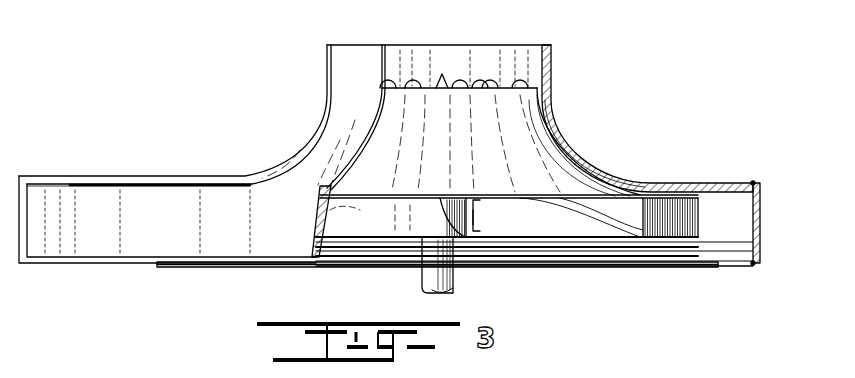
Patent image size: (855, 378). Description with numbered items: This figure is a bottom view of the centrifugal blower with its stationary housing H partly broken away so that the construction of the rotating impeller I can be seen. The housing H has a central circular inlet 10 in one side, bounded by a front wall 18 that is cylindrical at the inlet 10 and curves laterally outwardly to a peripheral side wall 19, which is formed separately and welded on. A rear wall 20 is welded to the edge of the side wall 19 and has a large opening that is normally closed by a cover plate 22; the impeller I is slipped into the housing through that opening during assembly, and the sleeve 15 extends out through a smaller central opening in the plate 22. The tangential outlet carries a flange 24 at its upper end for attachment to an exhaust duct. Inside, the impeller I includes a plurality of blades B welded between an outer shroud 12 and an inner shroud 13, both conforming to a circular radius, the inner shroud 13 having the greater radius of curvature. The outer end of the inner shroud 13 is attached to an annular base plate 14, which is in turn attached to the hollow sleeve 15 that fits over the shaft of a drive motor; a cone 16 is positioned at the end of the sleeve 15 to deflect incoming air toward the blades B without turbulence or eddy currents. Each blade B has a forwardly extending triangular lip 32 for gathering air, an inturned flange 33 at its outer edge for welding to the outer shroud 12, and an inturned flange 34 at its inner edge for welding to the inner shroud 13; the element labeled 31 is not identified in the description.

The inlet 10 is at (378, 46).
The outer shroud 12 is at (447, 151).
The inner shroud 13 is at (520, 232).
The base plate 14 is at (355, 245).
The sleeve 15 is at (422, 280).
The cone 16 is at (443, 80).
The front wall 18 is at (551, 83).
The side wall 19 is at (110, 240).
The rear wall 20 is at (751, 264).
The cover plate 22 is at (660, 268).
The flange 24 is at (117, 178).
The spring contact 31 is at (405, 80).
The lip 32 is at (455, 88).
The inturned flange 33 is at (480, 200).
The inturned flange 34 is at (480, 205).
The housing H is at (302, 140).
The impeller I is at (560, 144).
The blades B is at (452, 201).